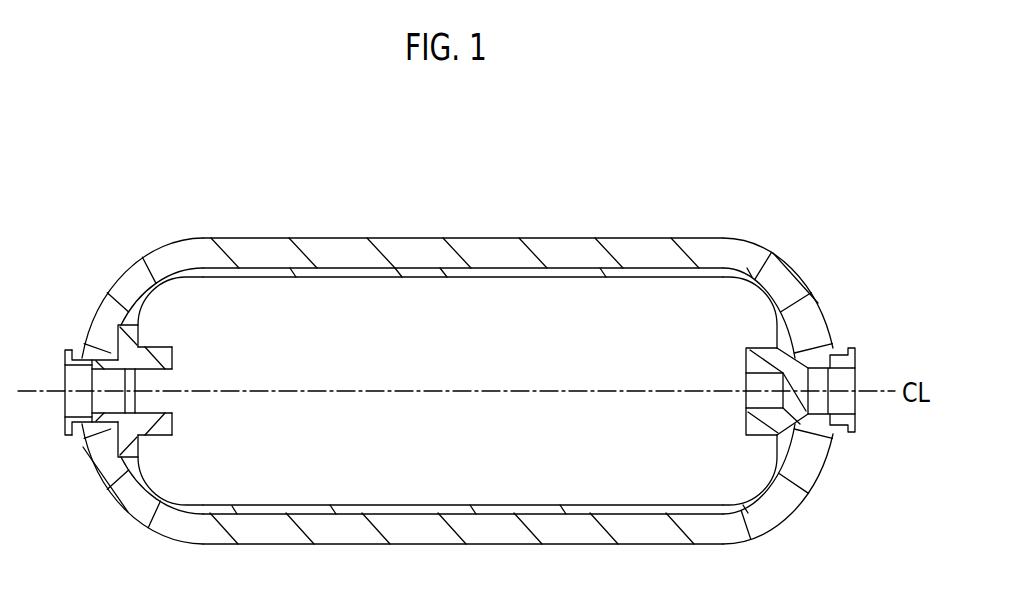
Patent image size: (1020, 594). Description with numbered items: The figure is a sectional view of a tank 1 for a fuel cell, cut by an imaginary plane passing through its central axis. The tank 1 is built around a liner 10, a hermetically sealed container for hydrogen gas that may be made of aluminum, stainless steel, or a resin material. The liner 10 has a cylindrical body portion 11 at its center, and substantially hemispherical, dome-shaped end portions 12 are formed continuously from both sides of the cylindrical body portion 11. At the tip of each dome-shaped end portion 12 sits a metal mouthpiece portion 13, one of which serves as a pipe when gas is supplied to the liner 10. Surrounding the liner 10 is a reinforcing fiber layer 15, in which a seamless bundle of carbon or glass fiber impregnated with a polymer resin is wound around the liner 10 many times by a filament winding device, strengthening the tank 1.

The tank 1 is at (718, 177).
The liner 10 is at (470, 271).
The cylindrical body portion 11 is at (353, 273).
The end portion 12 is at (147, 283).
The mouthpiece portion 13 is at (118, 355).
The reinforcing fiber layer 15 is at (556, 256).